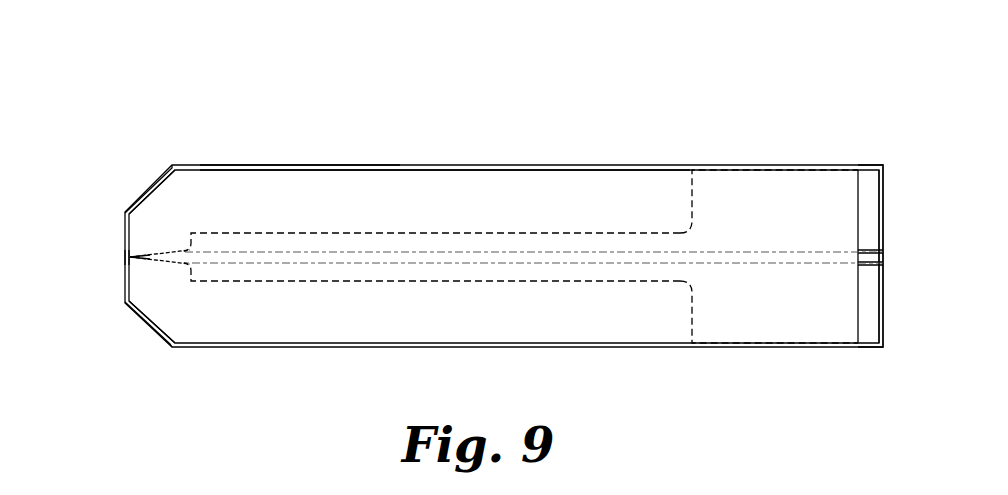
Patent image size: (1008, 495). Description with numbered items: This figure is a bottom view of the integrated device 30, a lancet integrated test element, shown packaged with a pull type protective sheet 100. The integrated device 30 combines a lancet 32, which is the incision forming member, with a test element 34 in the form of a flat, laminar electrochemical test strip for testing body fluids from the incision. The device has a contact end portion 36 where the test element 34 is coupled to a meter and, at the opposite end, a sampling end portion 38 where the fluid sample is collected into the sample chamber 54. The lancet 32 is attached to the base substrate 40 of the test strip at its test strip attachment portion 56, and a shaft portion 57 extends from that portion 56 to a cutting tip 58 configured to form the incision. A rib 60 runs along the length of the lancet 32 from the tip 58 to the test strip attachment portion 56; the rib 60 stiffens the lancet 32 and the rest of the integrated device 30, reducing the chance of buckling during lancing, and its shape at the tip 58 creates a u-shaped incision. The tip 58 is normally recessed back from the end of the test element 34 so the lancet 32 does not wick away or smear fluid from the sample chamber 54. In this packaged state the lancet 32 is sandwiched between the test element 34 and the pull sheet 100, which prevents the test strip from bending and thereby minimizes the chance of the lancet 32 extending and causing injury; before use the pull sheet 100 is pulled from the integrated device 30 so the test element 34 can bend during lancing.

The integrated device 30 is at (222, 155).
The lancet 32 is at (733, 188).
The test element 34 is at (355, 186).
The contact end portion 36 is at (846, 151).
The sampling end portion 38 is at (139, 182).
The base substrate 40 is at (476, 186).
The sample chamber 54 is at (122, 257).
The test strip attachment portion 56 is at (775, 321).
The shaft portion 57 is at (475, 283).
The tip 58 is at (177, 267).
The rib 60 is at (563, 263).
The pull sheet 100 is at (292, 178).